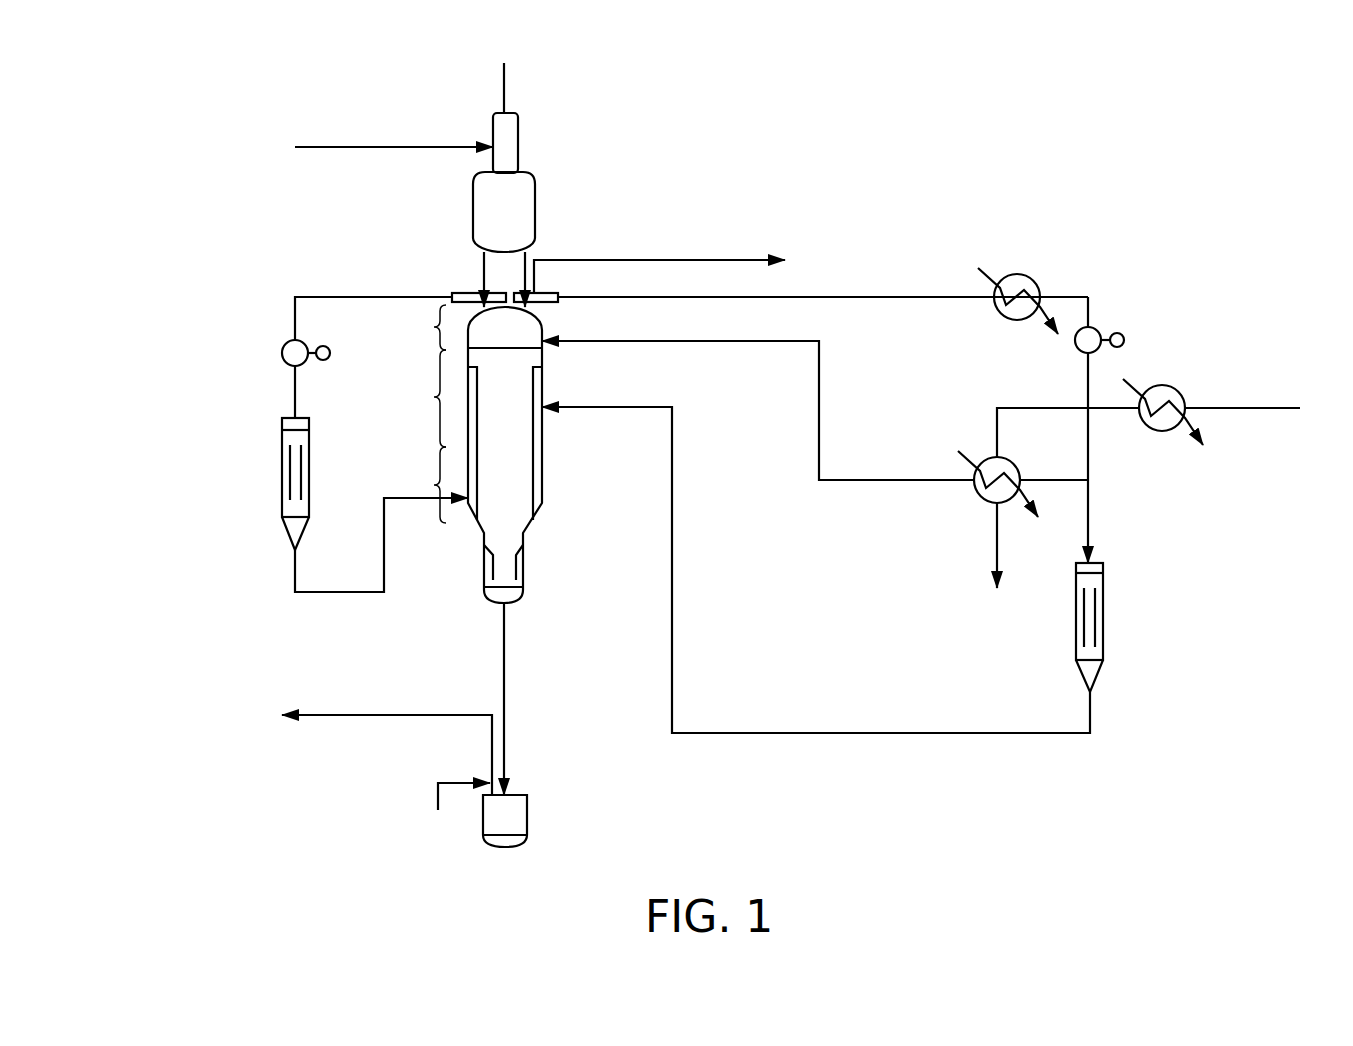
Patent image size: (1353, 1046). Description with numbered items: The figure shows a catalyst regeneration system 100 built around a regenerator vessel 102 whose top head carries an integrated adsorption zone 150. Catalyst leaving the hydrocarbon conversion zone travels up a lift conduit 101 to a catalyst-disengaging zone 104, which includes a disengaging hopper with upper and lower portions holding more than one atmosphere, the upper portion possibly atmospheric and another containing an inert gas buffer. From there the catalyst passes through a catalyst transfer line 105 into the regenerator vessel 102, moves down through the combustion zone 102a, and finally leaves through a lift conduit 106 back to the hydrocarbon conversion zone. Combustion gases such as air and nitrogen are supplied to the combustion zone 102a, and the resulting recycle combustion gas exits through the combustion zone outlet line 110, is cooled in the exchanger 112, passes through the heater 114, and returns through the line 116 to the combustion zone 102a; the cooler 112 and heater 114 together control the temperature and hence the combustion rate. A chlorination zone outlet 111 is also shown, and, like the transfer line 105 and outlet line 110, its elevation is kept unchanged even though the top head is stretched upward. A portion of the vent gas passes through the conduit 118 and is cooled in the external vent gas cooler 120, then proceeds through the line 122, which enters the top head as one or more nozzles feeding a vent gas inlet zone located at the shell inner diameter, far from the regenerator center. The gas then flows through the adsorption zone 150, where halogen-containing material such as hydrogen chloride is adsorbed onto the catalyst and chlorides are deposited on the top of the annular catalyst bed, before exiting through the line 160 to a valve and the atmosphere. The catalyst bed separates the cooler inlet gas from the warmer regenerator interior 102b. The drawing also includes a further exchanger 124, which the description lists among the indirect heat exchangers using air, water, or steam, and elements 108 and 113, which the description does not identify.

The regeneration system 100 is at (197, 130).
The lift conduit 101 is at (318, 147).
The regenerator vessel 102 is at (556, 546).
The combustion zone 102a is at (434, 397).
The regenerator interior 102b is at (434, 485).
The catalyst-disengaging zone 104 is at (473, 210).
The catalyst transfer line 105 is at (482, 265).
The lift conduit 106 is at (358, 717).
The heat exchange section 108 is at (1168, 452).
The line 110 is at (882, 297).
The chlorination zone outlet 111 is at (315, 297).
The exchanger 112 is at (281, 468).
The return line 113 is at (320, 592).
The heater 114 is at (1104, 610).
The line 116 is at (880, 733).
The conduit 118 is at (1053, 478).
The cooler 120 is at (993, 460).
The line 122 is at (819, 476).
The exchanger 124 is at (1165, 386).
The adsorption zone 150 is at (434, 327).
The line 160 is at (662, 258).